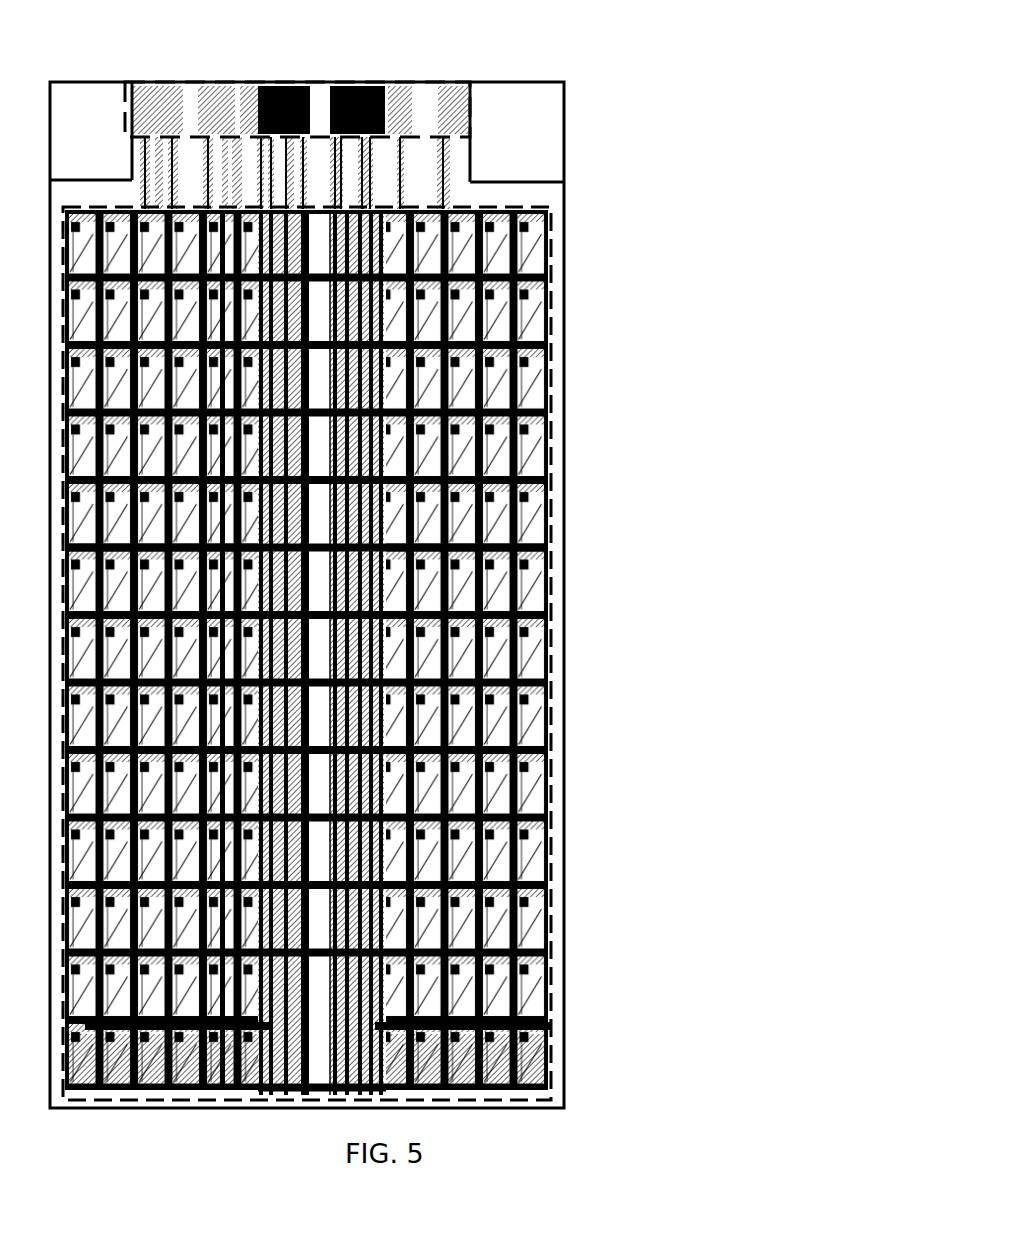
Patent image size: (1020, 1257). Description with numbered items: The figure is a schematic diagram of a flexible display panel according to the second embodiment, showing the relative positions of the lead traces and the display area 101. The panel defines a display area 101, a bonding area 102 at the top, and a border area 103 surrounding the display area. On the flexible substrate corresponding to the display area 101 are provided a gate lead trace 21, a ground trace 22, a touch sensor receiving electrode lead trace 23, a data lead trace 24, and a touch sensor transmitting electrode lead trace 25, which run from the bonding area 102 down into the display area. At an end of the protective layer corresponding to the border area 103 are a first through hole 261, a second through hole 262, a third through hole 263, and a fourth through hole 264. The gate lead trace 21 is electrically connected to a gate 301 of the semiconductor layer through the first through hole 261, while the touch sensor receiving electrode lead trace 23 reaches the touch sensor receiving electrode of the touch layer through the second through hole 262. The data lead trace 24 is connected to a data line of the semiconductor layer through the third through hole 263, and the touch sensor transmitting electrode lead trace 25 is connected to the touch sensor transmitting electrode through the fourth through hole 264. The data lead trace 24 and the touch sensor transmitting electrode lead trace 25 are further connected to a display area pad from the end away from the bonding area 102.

The display area 101 is at (548, 355).
The bonding area 102 is at (472, 102).
The border area 103 is at (557, 435).
The gate 301 is at (545, 490).
The gate lead trace 21 is at (222, 655).
The ground trace 22 is at (470, 127).
The touch sensor receiving electrode lead trace 23 is at (352, 60).
The data lead trace 24 is at (340, 82).
The touch sensor transmitting electrode lead trace 25 is at (285, 82).
The first through hole 261 is at (551, 547).
The second through hole 262 is at (551, 750).
The third through hole 263 is at (551, 885).
The fourth through hole 264 is at (551, 1024).